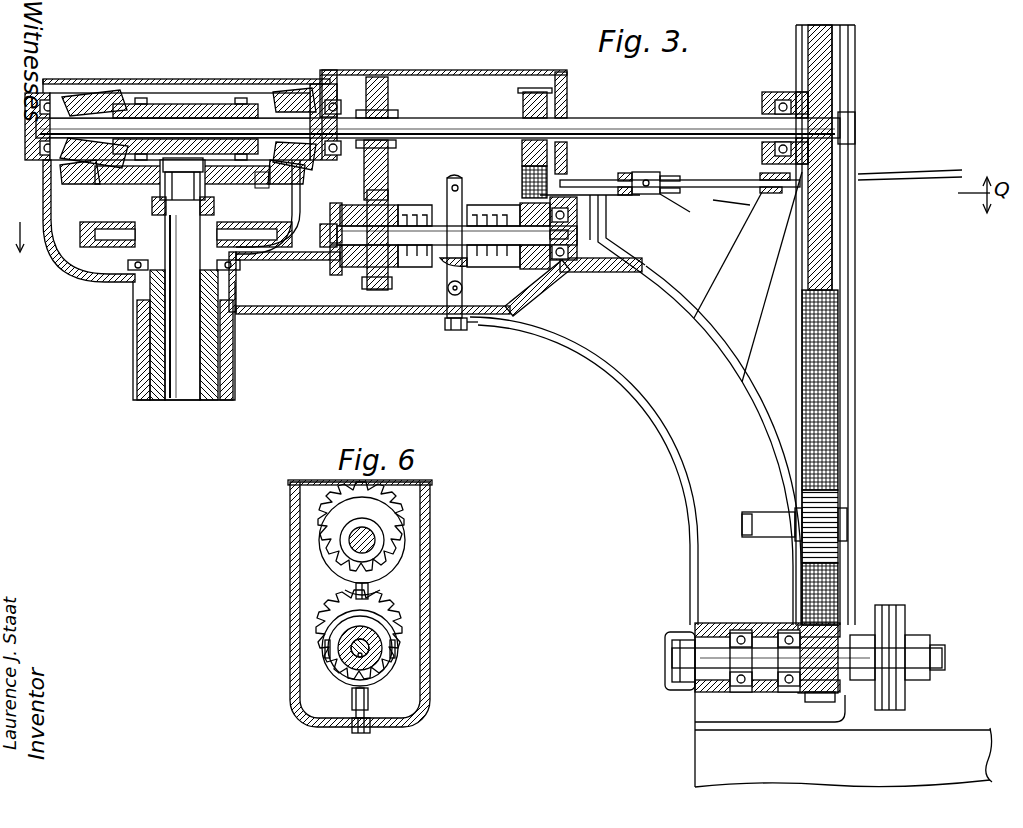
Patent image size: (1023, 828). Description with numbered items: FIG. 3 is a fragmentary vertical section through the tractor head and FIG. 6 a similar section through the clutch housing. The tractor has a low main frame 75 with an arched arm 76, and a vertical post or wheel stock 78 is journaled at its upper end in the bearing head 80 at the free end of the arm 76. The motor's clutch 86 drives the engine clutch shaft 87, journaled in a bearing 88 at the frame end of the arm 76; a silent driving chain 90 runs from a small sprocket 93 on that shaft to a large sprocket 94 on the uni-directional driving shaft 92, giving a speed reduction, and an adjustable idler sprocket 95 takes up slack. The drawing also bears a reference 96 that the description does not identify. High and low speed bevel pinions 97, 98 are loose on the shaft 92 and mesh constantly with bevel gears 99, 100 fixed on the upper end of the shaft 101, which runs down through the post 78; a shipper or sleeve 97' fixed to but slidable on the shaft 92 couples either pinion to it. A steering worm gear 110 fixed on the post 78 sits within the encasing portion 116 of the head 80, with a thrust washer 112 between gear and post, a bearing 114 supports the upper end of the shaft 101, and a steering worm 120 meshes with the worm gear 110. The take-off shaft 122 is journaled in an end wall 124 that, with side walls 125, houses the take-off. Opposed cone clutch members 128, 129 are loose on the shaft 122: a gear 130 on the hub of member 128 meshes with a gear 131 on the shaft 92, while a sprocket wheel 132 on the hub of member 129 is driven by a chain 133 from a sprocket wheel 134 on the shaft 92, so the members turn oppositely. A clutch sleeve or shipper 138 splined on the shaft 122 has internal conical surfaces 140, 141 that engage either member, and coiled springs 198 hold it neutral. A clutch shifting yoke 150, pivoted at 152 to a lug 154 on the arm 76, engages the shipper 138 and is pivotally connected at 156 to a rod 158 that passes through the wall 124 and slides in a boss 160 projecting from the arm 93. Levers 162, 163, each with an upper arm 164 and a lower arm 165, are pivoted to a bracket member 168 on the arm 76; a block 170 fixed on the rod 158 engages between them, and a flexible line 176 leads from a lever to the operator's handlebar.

In FIG. 3, the main frame 75 is at (700, 758).
In FIG. 3, the arched arm 76 is at (632, 384).
In FIG. 3, the wheel stock 78 is at (152, 372).
In FIG. 3, the bearing head 80 is at (137, 352).
In FIG. 3, the clutch 86 is at (900, 659).
In FIG. 3, the engine clutch shaft 87 is at (776, 668).
In FIG. 3, the bearing 88 is at (700, 692).
In FIG. 3, the driving chain 90 is at (830, 364).
In FIG. 3, the uni-directional driving shaft 92 is at (630, 126).
In FIG. 6, the uni-directional driving shaft 92 is at (375, 540).
In FIG. 3, the arm 93 is at (740, 250).
In FIG. 3, the large sprocket 94 is at (822, 250).
In FIG. 3, the idler sprocket 95 is at (838, 554).
In FIG. 3, the tube 96 is at (850, 438).
In FIG. 3, the high speed bevel driving pinion 97 is at (94, 109).
In FIG. 3, the shipper sleeve 97' is at (185, 105).
In FIG. 3, the low speed bevel driving pinion 98 is at (292, 95).
In FIG. 3, the high speed bevel driving gear 99 is at (88, 222).
In FIG. 3, the low speed bevel driving gear 100 is at (52, 237).
In FIG. 3, the shaft 101 is at (178, 392).
In FIG. 3, the steering worm gear 110 is at (66, 262).
In FIG. 3, the thrust washer 112 is at (133, 292).
In FIG. 3, the bearing 114 is at (152, 203).
In FIG. 3, the encasing portion 116 is at (46, 198).
In FIG. 3, the steering worm 120 is at (338, 262).
In FIG. 3, the clutch shaft 122 is at (325, 235).
In FIG. 6, the clutch shaft 122 is at (342, 656).
In FIG. 3, the end wall 124 is at (556, 155).
In FIG. 3, the side walls 125 is at (470, 82).
In FIG. 6, the side walls 125 is at (404, 556).
In FIG. 3, the cone clutch member 128 is at (398, 210).
In FIG. 3, the cone clutch member 129 is at (522, 208).
In FIG. 3, the gear 130 is at (376, 292).
In FIG. 6, the gear 130 is at (408, 628).
In FIG. 3, the gear 131 is at (390, 100).
In FIG. 6, the gear 131 is at (410, 512).
In FIG. 3, the sprocket wheel 132 is at (540, 280).
In FIG. 3, the chain 133 is at (636, 214).
In FIG. 3, the sprocket wheel 134 is at (523, 100).
In FIG. 3, the clutch sleeve 138 is at (468, 276).
In FIG. 6, the clutch sleeve 138 is at (350, 662).
In FIG. 3, the internal conical surface 140 is at (408, 205).
In FIG. 3, the internal conical surface 141 is at (500, 205).
In FIG. 3, the clutch shifting yoke 150 is at (452, 184).
In FIG. 6, the clutch shifting yoke 150 is at (400, 668).
In FIG. 3, the pivot 152 is at (452, 318).
In FIG. 6, the pivot 152 is at (346, 722).
In FIG. 3, the lug 154 is at (470, 320).
In FIG. 6, the lug 154 is at (372, 706).
In FIG. 3, the pivotal connection 156 is at (456, 190).
In FIG. 6, the pivotal connection 156 is at (352, 600).
In FIG. 3, the rod 158 is at (580, 200).
In FIG. 6, the rod 158 is at (380, 592).
In FIG. 3, the boss 160 is at (740, 210).
In FIG. 3, the lever 162 is at (630, 173).
In FIG. 3, the lever 163 is at (760, 176).
In FIG. 3, the upper arm 164 is at (660, 180).
In FIG. 3, the lower arm 165 is at (664, 192).
In FIG. 3, the bracket member 168 is at (608, 242).
In FIG. 3, the block 170 is at (688, 210).
In FIG. 3, the flexible line 176 is at (905, 164).
In FIG. 3, the coiled springs 198 is at (430, 270).